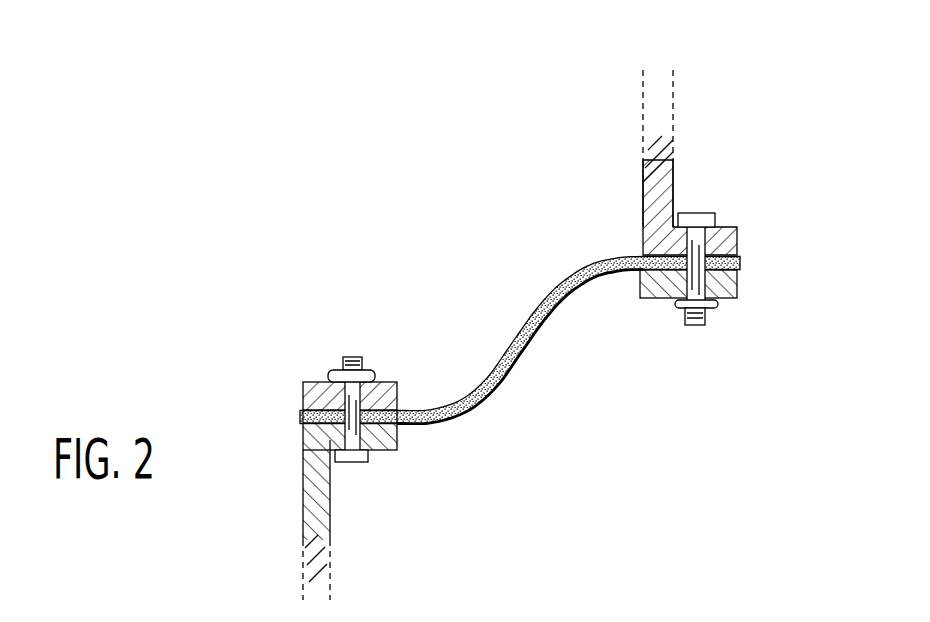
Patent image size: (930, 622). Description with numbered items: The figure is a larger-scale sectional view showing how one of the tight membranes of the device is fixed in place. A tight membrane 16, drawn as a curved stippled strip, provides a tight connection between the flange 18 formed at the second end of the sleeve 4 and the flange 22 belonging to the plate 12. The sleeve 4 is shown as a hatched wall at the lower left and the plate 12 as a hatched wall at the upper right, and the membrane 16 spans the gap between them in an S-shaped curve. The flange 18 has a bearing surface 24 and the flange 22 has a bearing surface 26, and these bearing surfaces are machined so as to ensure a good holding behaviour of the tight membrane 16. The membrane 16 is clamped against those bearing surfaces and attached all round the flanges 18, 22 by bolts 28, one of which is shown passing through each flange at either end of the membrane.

The sleeve 4 is at (317, 540).
The plate 12 is at (673, 122).
The tight membrane 16 is at (541, 295).
The flange 18 is at (357, 398).
The flange 22 is at (694, 278).
The bearing surface 24 is at (330, 410).
The bearing surface 26 is at (658, 297).
The bolts 28 is at (360, 358).